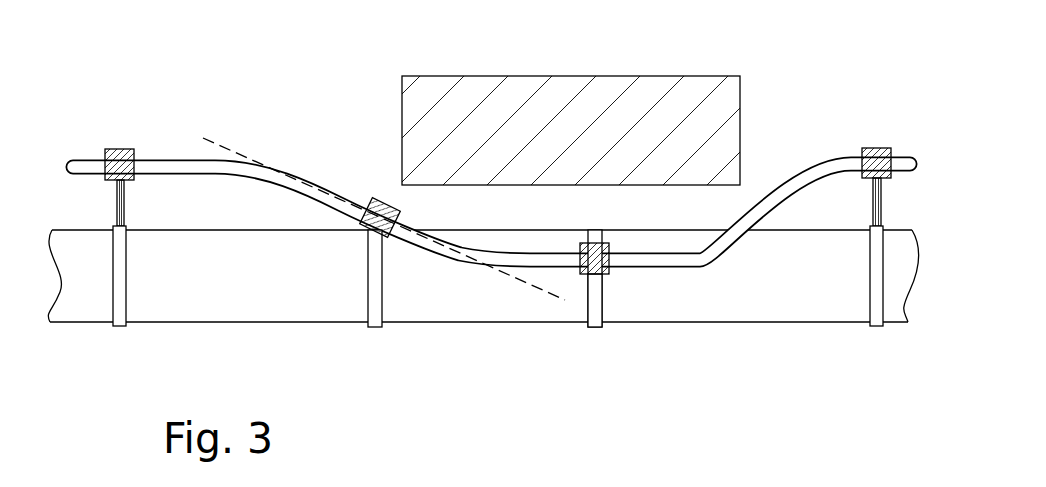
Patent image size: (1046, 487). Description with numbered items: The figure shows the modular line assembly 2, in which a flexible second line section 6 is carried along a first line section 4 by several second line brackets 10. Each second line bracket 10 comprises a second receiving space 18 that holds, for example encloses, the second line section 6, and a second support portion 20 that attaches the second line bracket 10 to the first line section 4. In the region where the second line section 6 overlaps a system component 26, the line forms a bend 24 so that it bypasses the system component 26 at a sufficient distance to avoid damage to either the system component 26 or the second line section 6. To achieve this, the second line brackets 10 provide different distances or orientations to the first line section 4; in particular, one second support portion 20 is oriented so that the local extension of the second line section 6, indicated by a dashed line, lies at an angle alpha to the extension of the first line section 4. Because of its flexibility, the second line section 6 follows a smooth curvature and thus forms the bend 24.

The modular line assembly 2 is at (503, 279).
The first line section 4 is at (82, 308).
The second line section 6 is at (710, 253).
The second line bracket 10 is at (514, 238).
The second receiving space 18 is at (123, 158).
The second support portion 20 is at (121, 315).
The bend 24 is at (538, 288).
The system component 26 is at (570, 92).